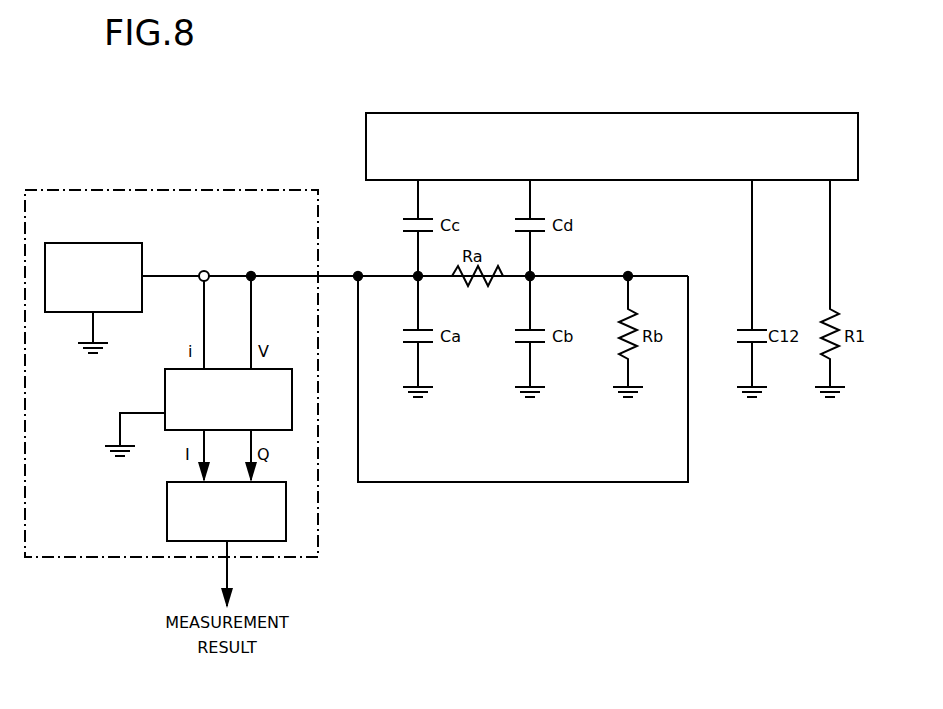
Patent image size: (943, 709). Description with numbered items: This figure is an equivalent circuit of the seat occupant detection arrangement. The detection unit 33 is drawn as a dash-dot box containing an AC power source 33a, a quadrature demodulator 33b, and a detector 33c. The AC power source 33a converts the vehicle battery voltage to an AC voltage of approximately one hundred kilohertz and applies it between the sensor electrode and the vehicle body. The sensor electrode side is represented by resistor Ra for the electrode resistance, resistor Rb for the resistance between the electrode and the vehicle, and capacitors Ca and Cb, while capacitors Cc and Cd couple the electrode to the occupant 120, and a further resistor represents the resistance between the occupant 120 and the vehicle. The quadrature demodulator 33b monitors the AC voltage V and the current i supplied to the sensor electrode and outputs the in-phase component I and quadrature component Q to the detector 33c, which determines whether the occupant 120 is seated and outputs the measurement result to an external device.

The detection unit 33 is at (259, 189).
The AC power source 33a is at (120, 245).
The quadrature demodulator 33b is at (164, 384).
The detector 33c is at (164, 495).
The occupant 120 is at (812, 114).